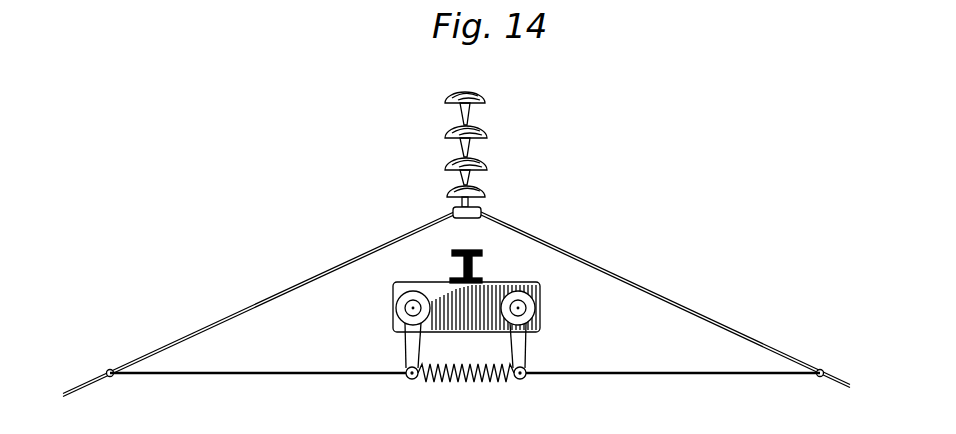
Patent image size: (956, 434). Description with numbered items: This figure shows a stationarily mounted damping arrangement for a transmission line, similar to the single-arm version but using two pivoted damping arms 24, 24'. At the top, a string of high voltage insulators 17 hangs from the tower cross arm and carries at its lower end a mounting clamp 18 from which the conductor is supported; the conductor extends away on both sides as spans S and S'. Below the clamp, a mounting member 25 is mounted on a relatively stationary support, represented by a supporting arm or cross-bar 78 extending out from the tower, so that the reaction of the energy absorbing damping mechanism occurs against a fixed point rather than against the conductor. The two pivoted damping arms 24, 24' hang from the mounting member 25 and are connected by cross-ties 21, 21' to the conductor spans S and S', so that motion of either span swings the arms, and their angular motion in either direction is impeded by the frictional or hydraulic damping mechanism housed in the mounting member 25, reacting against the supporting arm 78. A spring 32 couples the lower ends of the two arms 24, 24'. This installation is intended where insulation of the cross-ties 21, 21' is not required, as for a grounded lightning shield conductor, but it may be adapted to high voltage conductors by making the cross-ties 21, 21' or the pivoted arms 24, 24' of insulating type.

The span S is at (259, 304).
The span S' is at (665, 300).
The high voltage insulators 17 is at (452, 130).
The mounting clamps 18 is at (470, 213).
The cross-tie 21 is at (261, 394).
The cross-tie 21' is at (669, 394).
The pivoted damping arm 24 is at (390, 335).
The pivoted damping arm 24' is at (546, 335).
The mounting member 25 is at (433, 287).
The spring 32 is at (472, 382).
The supporting arm 78 is at (478, 267).